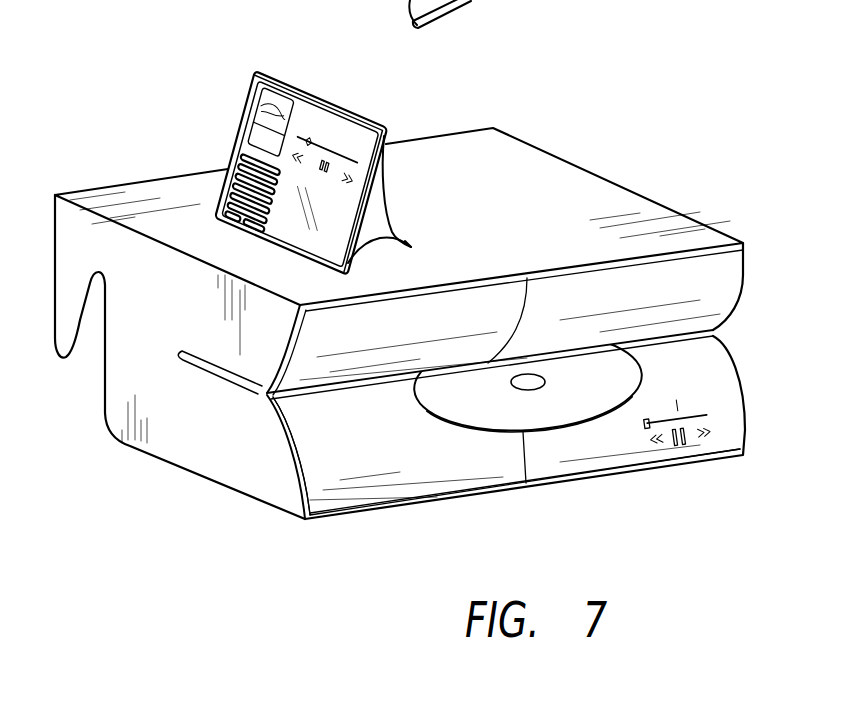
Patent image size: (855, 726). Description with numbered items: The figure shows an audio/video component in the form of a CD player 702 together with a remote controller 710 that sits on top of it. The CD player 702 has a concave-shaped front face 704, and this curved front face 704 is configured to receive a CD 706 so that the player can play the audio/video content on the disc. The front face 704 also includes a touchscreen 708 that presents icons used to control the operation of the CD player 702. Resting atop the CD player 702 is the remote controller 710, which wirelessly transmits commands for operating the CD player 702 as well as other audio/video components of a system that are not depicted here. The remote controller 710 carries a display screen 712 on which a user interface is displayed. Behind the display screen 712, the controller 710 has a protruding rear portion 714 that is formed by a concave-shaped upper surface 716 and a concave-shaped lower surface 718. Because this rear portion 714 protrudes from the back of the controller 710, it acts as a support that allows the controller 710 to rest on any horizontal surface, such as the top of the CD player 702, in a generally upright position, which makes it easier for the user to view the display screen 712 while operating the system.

The CD player 702 is at (642, 222).
The concave-shaped front face 704 is at (342, 475).
The CD 706 is at (588, 408).
The touchscreen 708 is at (690, 438).
The remote controller 710 is at (337, 131).
The display screen 712 is at (271, 108).
The protruding rear portion 714 is at (377, 232).
The concave-shaped upper surface 716 is at (386, 198).
The concave-shaped lower surface 718 is at (350, 268).